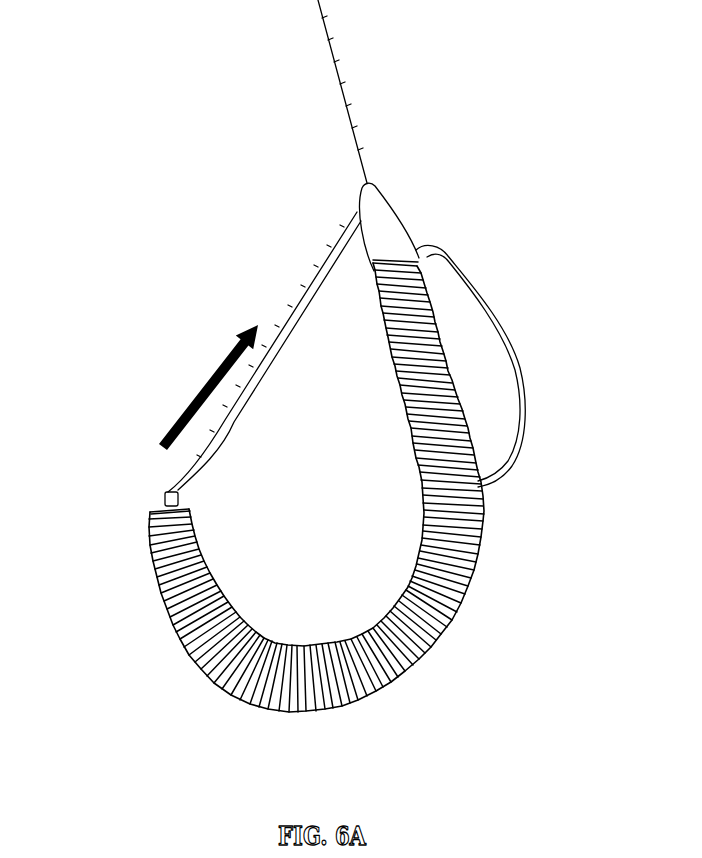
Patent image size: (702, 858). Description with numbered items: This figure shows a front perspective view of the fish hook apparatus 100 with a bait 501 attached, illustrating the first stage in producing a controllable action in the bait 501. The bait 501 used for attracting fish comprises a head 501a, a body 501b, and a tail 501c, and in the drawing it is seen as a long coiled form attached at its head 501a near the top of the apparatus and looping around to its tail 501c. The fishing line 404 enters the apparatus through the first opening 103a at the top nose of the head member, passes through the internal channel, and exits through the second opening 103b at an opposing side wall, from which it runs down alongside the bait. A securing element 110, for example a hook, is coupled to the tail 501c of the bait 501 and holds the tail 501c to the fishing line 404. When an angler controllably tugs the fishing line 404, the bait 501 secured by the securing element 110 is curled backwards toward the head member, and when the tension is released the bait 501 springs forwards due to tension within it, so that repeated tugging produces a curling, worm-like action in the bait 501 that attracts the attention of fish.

The fish hook apparatus 100 is at (457, 168).
The first opening 103a is at (369, 182).
The second opening 103b is at (357, 230).
The fishing line 404 is at (298, 291).
The securing element 110 is at (166, 496).
The bait 501 is at (355, 486).
The head 501a is at (372, 292).
The body 501b is at (476, 585).
The tail 501c is at (193, 516).